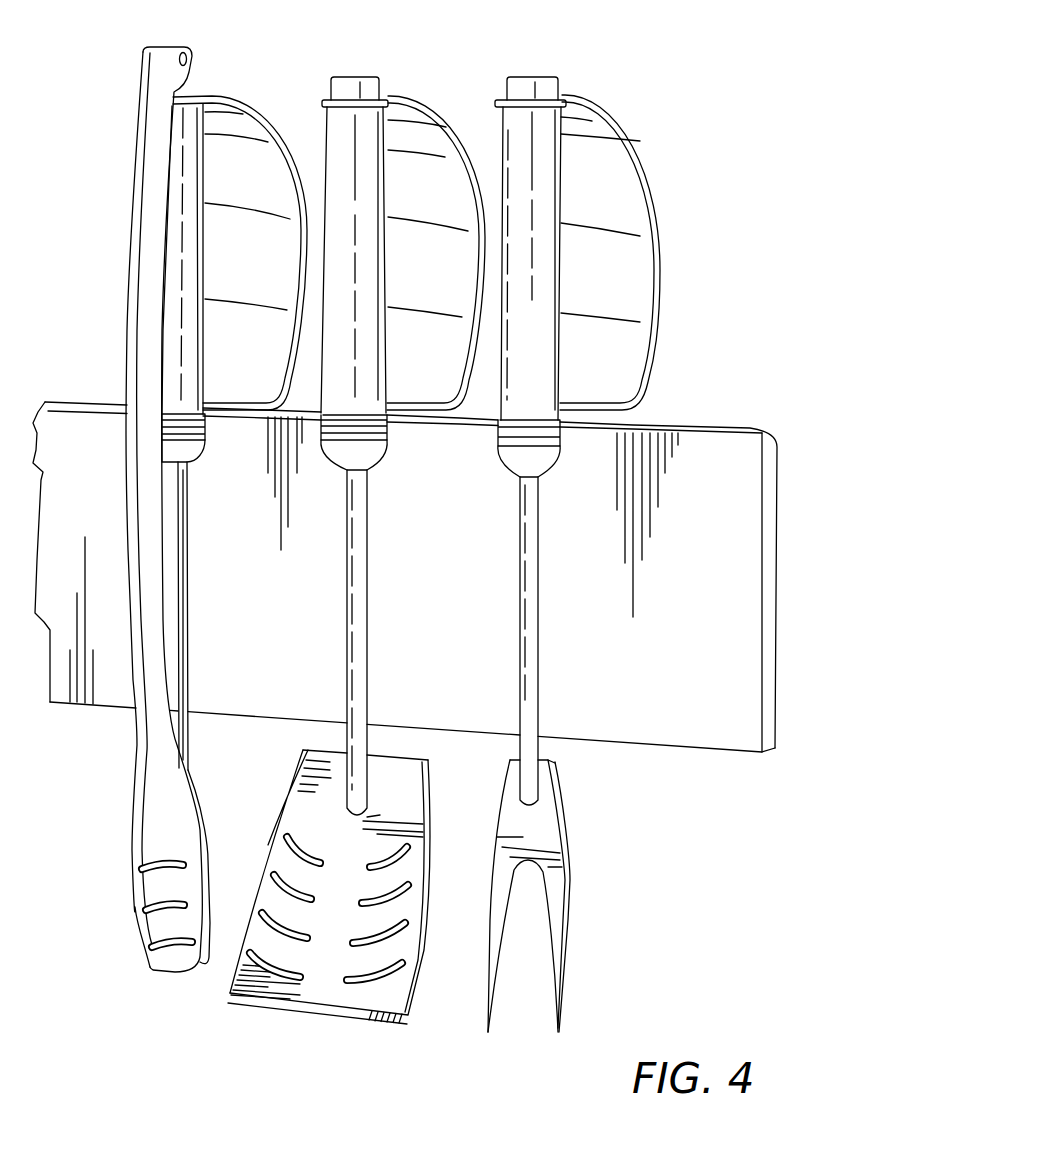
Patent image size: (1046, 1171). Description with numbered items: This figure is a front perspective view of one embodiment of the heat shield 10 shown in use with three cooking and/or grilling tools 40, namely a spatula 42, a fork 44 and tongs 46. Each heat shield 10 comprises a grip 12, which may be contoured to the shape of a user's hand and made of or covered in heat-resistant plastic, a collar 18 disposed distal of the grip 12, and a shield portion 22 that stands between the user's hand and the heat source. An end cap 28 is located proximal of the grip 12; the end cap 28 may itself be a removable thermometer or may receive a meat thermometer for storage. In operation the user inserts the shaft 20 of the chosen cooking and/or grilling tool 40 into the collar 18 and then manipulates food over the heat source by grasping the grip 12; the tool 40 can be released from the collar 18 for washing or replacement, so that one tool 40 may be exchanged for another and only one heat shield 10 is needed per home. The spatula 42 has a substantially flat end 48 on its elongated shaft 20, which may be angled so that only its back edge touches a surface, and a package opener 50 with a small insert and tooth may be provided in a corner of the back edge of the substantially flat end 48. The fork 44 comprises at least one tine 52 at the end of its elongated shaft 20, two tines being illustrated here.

The heat shield 10 is at (682, 84).
The grip 12 is at (507, 152).
The collar 18 is at (197, 443).
The shaft 20 is at (183, 608).
The shield portion 22 is at (689, 270).
The end cap 28 is at (548, 95).
The cooking and/or grilling tool 40 is at (611, 866).
The spatula 42 is at (303, 1036).
The fork 44 is at (533, 1050).
The tongs 46 is at (163, 998).
The substantially flat end 48 is at (308, 820).
The package opener 50 is at (430, 758).
The tine 52 is at (560, 943).